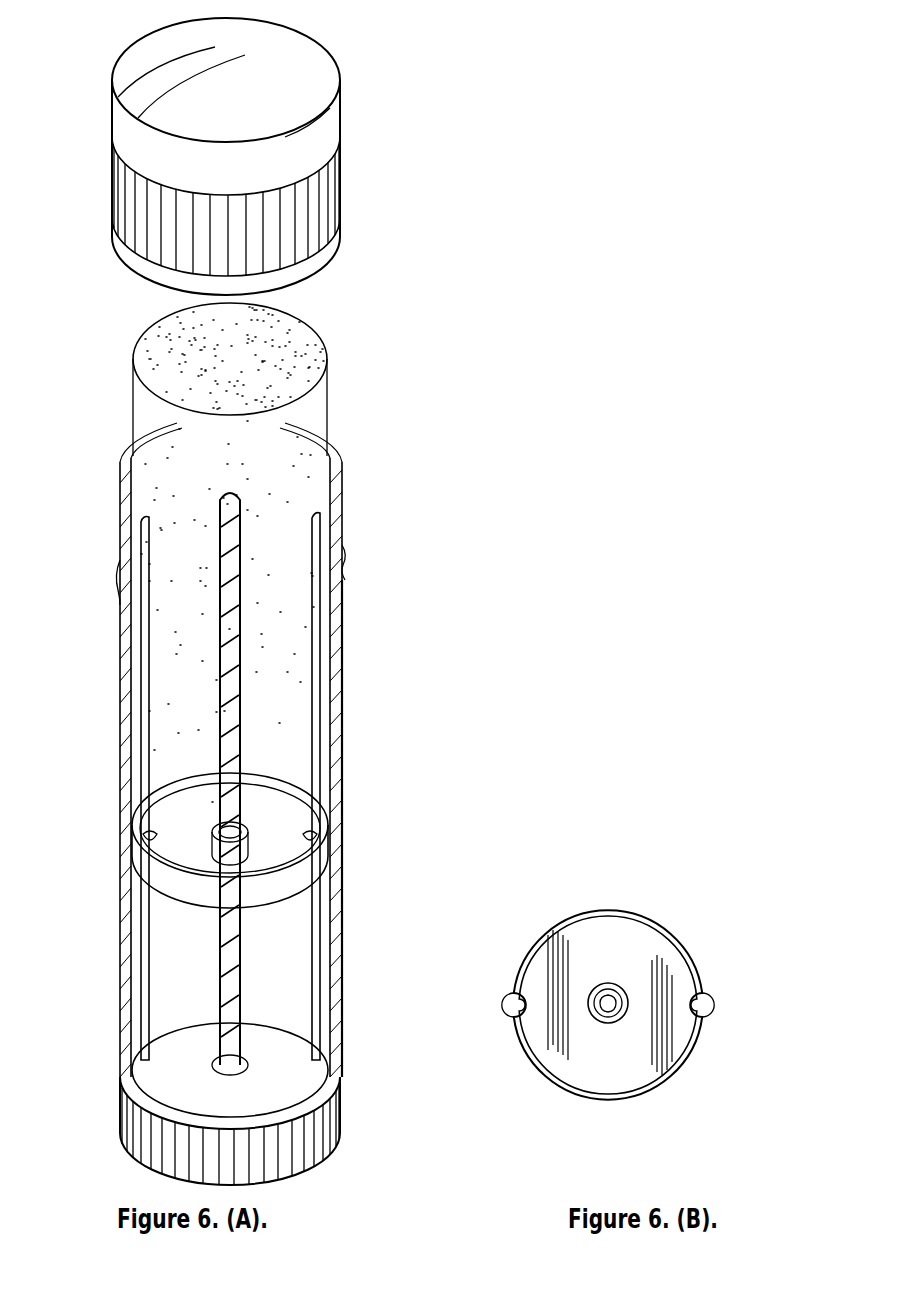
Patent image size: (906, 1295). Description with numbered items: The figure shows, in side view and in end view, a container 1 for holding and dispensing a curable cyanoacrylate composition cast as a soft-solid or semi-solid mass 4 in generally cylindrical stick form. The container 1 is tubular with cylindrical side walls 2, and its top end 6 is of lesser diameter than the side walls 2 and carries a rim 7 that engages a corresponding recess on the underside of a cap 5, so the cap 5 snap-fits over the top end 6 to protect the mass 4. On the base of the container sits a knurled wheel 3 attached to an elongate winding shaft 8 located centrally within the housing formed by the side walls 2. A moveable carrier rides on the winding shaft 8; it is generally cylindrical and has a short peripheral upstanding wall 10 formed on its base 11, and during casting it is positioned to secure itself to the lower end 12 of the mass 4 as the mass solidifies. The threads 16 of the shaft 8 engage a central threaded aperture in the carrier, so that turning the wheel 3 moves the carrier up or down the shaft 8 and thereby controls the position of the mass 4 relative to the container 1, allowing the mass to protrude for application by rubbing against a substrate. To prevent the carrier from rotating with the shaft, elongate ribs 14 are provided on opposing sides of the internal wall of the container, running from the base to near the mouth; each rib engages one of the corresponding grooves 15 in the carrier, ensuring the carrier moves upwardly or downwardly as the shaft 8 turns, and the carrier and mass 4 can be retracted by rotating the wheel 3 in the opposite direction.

The container 1 is at (352, 652).
The side walls 2 is at (342, 735).
The knurled wheel 3 is at (312, 1127).
The mass 4 is at (175, 378).
The cap 5 is at (146, 223).
The top end 6 is at (338, 512).
The rim 7 is at (120, 563).
The winding shaft 8 is at (253, 784).
The peripheral upstanding wall 10 is at (150, 858).
The base 11 is at (180, 858).
The lower end 12 is at (195, 812).
The elongate ribs 14 is at (143, 968).
The grooves 15 is at (707, 1000).
The threads 16 is at (258, 580).